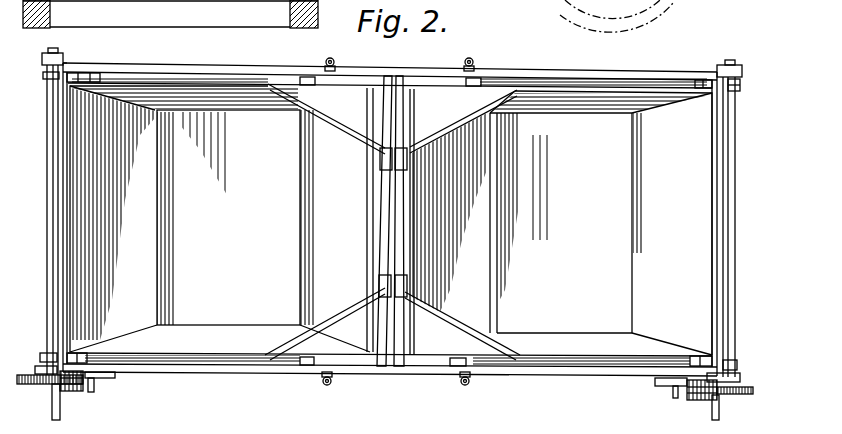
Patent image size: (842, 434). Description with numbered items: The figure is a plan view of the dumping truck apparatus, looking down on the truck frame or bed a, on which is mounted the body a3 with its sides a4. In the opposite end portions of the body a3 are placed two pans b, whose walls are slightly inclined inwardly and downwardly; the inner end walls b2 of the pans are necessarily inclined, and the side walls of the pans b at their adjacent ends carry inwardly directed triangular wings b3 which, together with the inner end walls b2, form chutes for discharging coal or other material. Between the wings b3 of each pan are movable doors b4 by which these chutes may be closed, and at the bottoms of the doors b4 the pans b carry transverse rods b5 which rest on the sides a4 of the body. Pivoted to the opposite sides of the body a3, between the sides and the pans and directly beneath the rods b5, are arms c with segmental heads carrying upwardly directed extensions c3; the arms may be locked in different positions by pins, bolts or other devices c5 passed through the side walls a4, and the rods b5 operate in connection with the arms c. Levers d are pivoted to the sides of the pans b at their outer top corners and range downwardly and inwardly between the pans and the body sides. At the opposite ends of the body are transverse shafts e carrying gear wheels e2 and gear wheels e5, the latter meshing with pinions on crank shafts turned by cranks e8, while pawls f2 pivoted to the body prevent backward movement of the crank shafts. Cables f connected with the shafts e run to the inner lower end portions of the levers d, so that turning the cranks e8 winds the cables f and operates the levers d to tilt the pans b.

The truck frame or bed a is at (378, 203).
The body a3 is at (197, 375).
The sides of the body a4 is at (541, 71).
The pans b is at (391, 220).
The inner end walls of the pans b2 is at (401, 221).
The wings b3 is at (392, 222).
The movable doors b4 is at (378, 198).
The transverse rods b5 is at (391, 368).
The arms c is at (414, 78).
The upwardly directed extensions c3 is at (308, 84).
The pins, bolts or other devices c5 is at (329, 58).
The levers d is at (117, 79).
The transverse shafts e is at (46, 202).
The gear wheels e2 is at (753, 393).
The gear wheels e5 is at (82, 391).
The cranks e8 is at (52, 415).
The cables f is at (46, 76).
The pawls f2 is at (100, 381).